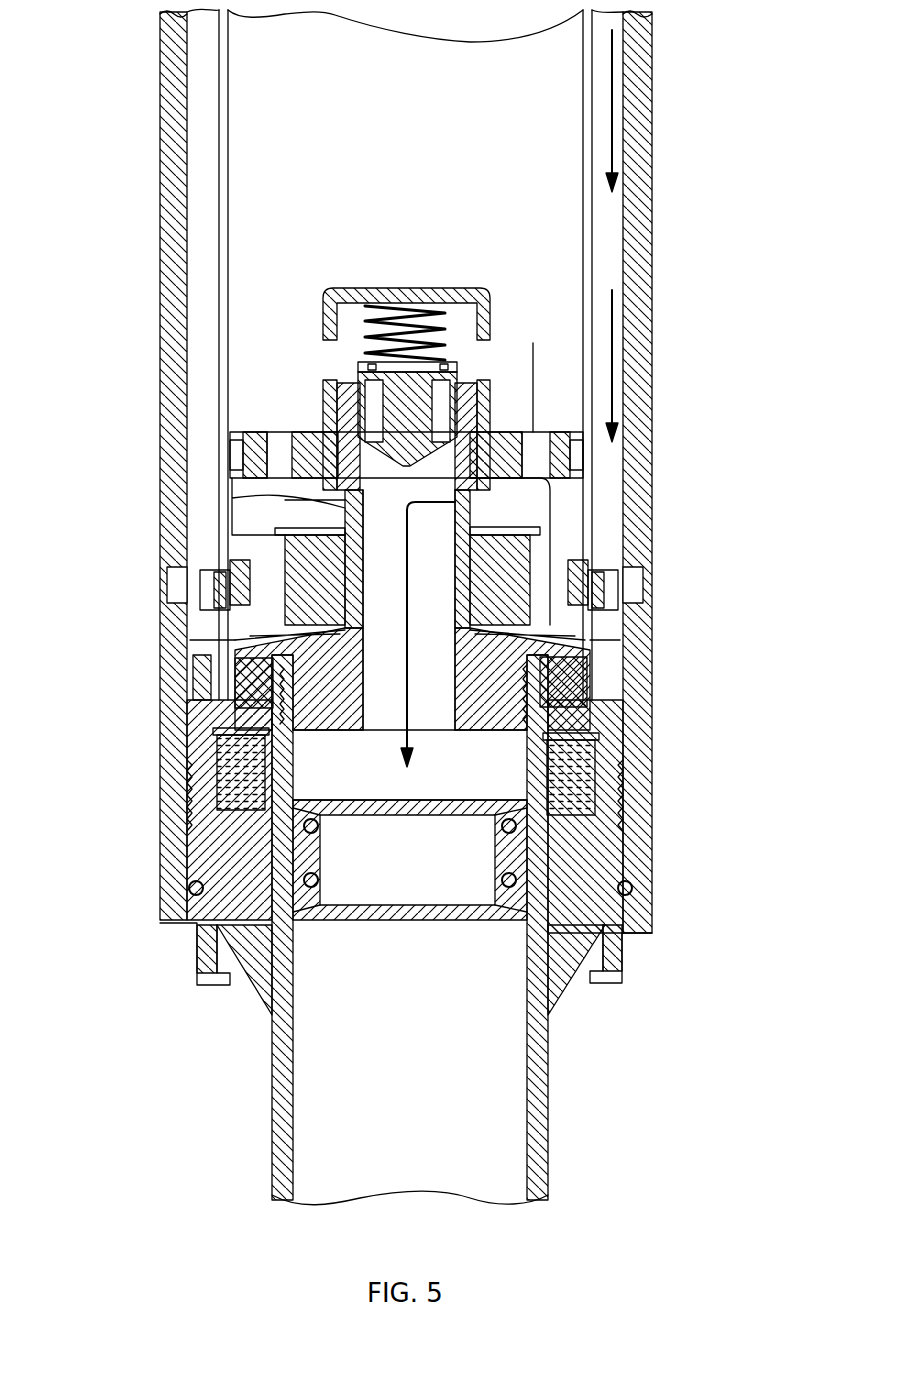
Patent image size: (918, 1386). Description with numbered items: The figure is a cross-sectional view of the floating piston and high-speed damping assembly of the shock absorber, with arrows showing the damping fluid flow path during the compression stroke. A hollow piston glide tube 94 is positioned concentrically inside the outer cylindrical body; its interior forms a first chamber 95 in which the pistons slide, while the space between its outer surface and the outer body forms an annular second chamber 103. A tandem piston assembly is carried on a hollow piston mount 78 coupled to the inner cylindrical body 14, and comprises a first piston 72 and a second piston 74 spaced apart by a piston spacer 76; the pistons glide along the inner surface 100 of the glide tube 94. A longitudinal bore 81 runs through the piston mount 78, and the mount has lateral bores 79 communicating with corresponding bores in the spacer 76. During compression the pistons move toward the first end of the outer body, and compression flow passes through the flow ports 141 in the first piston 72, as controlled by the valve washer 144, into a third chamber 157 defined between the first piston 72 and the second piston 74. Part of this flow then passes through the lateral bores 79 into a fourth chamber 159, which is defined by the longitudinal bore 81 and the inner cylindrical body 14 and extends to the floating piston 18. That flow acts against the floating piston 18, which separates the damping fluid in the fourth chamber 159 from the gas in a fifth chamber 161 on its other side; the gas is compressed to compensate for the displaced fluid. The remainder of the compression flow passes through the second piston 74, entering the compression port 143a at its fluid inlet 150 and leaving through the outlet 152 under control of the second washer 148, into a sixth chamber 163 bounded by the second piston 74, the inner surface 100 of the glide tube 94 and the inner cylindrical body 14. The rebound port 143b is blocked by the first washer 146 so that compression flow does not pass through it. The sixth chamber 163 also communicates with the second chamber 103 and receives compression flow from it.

The annular chamber 103 is at (198, 185).
The piston glide tube 94 is at (230, 208).
The first chamber 95 is at (403, 112).
The inner surface of glide tube 100 is at (583, 200).
The first piston 72 is at (340, 440).
The valve washer 144 is at (288, 488).
The piston spacer 76 is at (493, 490).
The flow ports 141 is at (542, 437).
The lateral bores 79 is at (455, 500).
The third chamber 157 is at (322, 517).
The first washer 146 is at (290, 530).
The rebound port 143b is at (232, 570).
The second piston 74 is at (235, 602).
The second washer 148 is at (340, 634).
The piston mount 78 is at (250, 652).
The fourth chamber 159 is at (450, 624).
The fluid inlet 150 is at (582, 560).
The compression port 143a is at (585, 590).
The outlet 152 is at (588, 596).
The sixth chamber 163 is at (575, 636).
The longitudinal bore 81 is at (375, 732).
The floating piston 18 is at (300, 862).
The fifth chamber 161 is at (434, 1089).
The inner cylindrical body 14 is at (548, 1080).